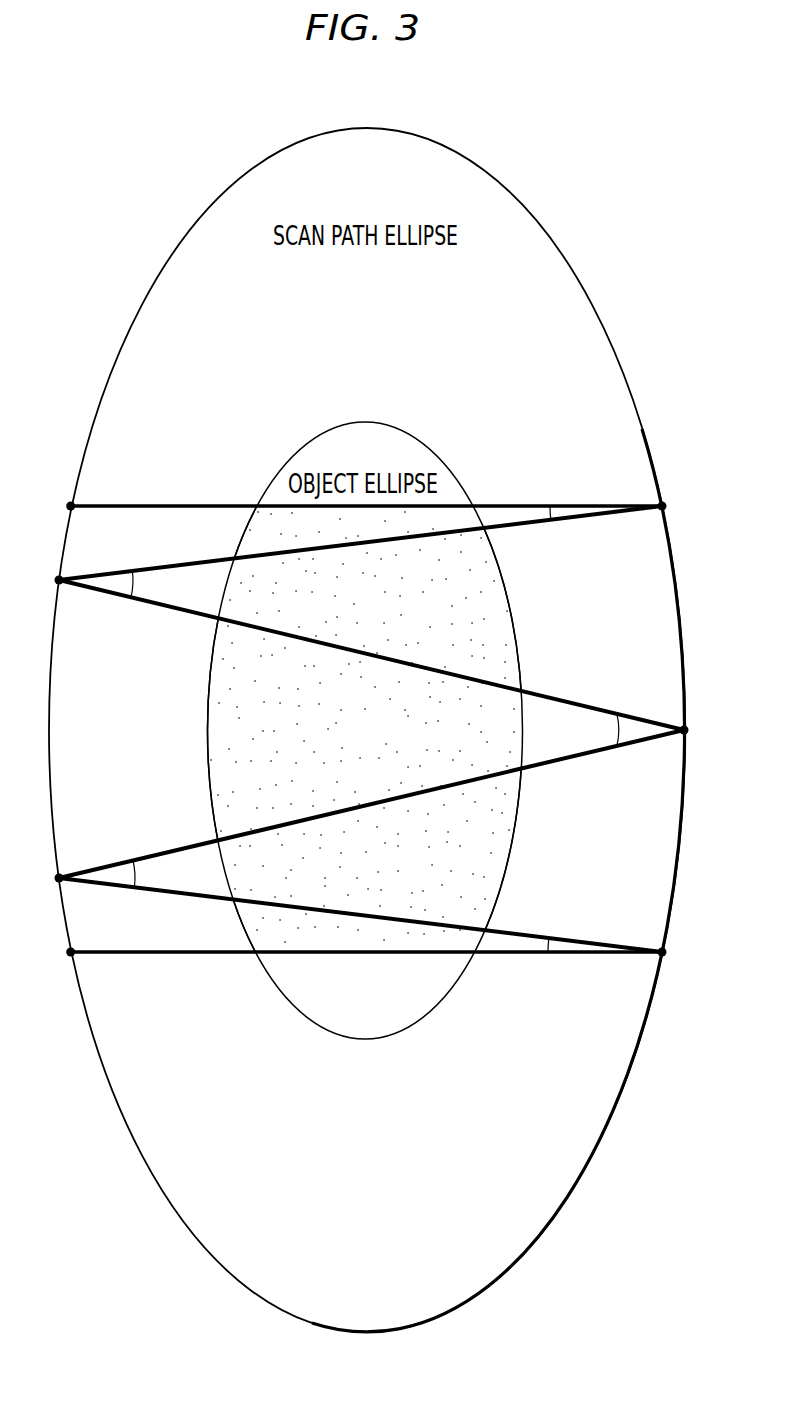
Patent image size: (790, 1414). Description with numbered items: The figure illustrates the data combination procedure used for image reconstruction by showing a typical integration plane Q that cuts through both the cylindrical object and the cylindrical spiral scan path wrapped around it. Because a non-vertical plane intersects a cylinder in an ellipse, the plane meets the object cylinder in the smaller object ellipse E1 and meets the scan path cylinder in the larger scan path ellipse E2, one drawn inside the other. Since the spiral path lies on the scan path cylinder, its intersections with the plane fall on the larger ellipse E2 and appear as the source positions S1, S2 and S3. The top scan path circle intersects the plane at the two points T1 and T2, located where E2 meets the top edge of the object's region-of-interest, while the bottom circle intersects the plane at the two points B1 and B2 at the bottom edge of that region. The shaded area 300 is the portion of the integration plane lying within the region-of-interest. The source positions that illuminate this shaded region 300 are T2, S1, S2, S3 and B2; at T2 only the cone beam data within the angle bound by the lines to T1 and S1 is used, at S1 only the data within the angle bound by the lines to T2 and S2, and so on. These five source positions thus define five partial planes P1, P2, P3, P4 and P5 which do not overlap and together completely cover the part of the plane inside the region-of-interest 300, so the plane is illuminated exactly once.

The larger ellipse E2 is at (329, 131).
The smaller ellipse E1 is at (353, 421).
The region-of-interest 300 is at (377, 739).
The top circle intersection point T1 is at (55, 503).
The top circle source position T2 is at (680, 505).
The first spiral source position S1 is at (42, 578).
The second spiral source position S2 is at (702, 734).
The third spiral source position S3 is at (42, 878).
The bottom circle intersection point B1 is at (55, 955).
The bottom circle source position B2 is at (680, 955).
The first partial plane P1 is at (238, 541).
The second partial plane P2 is at (519, 632).
The third partial plane P3 is at (207, 758).
The fourth partial plane P4 is at (518, 838).
The fifth partial plane P5 is at (238, 933).